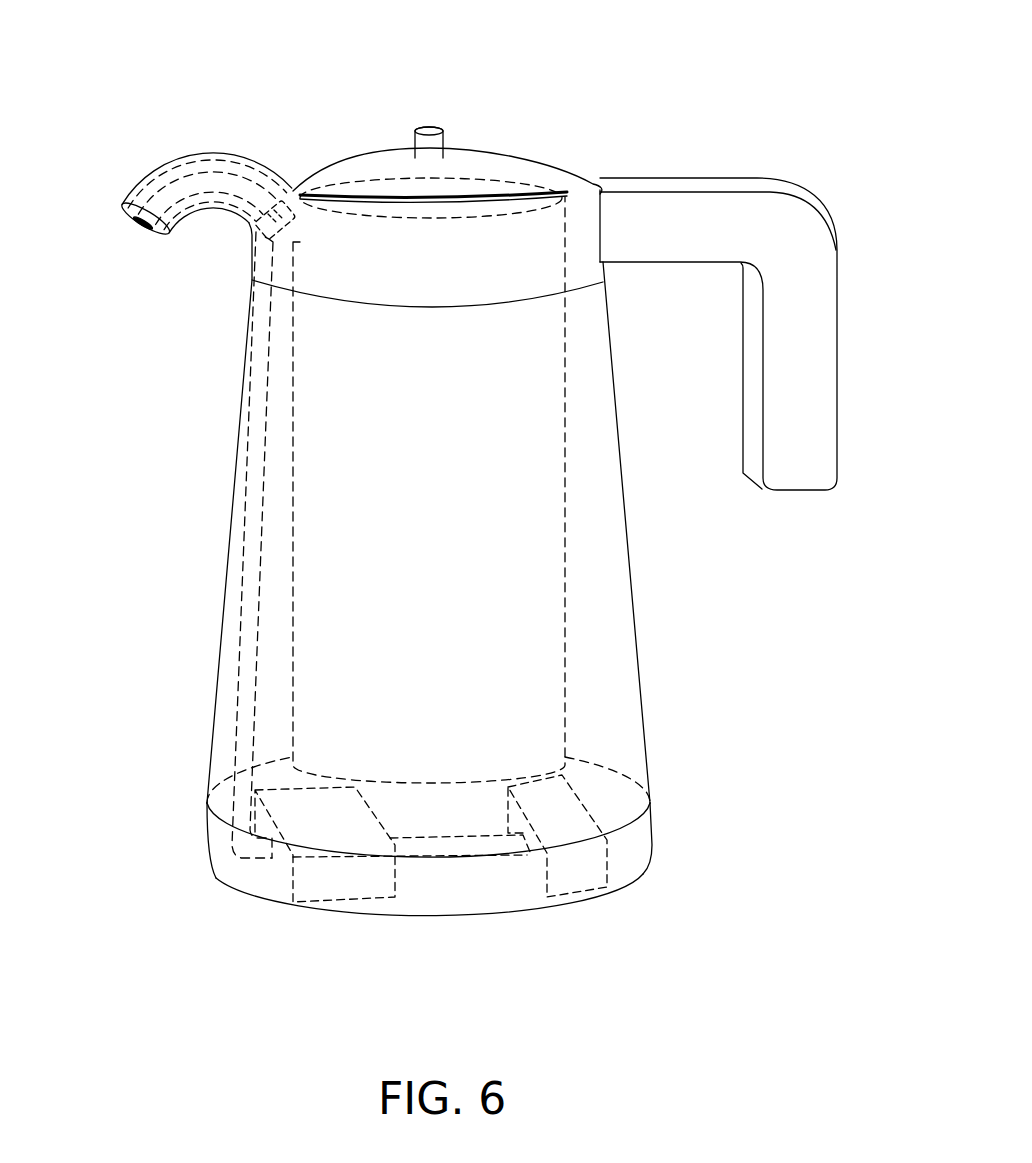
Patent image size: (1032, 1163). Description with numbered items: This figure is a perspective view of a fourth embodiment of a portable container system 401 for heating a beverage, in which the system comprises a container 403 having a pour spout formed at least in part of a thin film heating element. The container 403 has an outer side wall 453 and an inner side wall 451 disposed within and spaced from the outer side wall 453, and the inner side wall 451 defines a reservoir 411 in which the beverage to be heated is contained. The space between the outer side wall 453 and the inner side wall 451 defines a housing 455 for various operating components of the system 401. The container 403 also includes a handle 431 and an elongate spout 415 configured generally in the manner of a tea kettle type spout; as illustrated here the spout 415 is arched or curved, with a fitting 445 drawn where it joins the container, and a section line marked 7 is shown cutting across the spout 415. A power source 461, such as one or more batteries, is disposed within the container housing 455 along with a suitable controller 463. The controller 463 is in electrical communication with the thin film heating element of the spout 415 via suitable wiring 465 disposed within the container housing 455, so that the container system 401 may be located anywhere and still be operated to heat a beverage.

The portable container system 401 is at (579, 103).
The container 403 is at (238, 421).
The spout 415 is at (141, 181).
The spout fitting 445 is at (251, 180).
The section line 7- 7 is at (207, 283).
The handle 431 is at (838, 320).
The reservoir 411 is at (537, 465).
The inner side wall 451 is at (566, 577).
The outer side wall 453 is at (638, 642).
The housing 455 is at (599, 694).
The wiring 465 is at (255, 597).
The controller 463 is at (330, 887).
The power source 461 is at (577, 878).